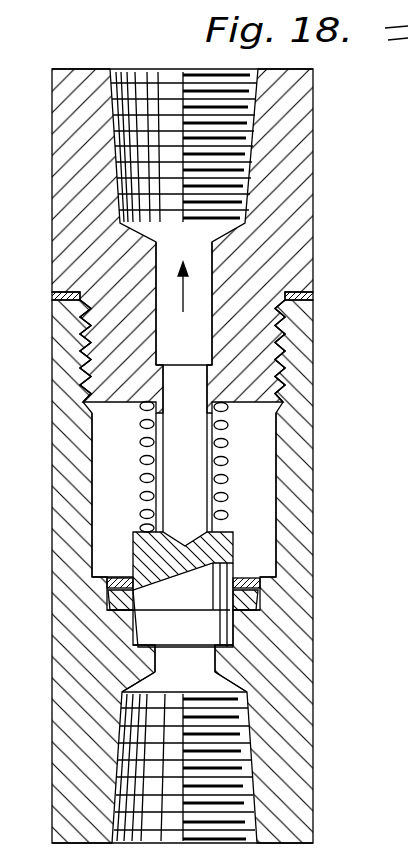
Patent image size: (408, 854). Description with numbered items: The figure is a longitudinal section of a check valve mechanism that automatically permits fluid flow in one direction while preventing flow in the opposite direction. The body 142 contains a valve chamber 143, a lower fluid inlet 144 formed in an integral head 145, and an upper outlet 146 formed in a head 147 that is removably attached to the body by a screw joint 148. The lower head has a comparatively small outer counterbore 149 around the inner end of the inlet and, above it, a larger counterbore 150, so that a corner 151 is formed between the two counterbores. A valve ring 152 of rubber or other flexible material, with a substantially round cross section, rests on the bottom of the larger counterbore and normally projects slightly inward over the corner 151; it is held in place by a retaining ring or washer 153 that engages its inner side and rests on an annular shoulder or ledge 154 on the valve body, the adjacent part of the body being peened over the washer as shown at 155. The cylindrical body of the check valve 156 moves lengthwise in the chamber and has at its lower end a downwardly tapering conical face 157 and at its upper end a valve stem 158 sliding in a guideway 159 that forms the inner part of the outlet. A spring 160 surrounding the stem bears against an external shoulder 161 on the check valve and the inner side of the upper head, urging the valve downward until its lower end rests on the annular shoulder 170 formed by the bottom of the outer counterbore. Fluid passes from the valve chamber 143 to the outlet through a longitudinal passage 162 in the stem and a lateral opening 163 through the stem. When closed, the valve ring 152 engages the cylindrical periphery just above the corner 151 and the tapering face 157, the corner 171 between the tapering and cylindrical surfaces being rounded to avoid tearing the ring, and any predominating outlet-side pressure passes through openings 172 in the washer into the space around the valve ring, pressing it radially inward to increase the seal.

The body 142 is at (305, 533).
The valve chamber 143 is at (265, 477).
The lower fluid inlet 144 is at (185, 659).
The integral head 145 is at (243, 673).
The upper outlet 146 is at (184, 156).
The head 147 is at (287, 230).
The screw joint 148 is at (283, 357).
The outer counterbore 149 is at (237, 631).
The counterbore 150 is at (110, 597).
The corner 151 is at (137, 645).
The valve ring 152 is at (127, 607).
The retaining ring or washer 153 is at (125, 577).
The annular shoulder or ledge 154 is at (263, 595).
The peened part 155 is at (257, 578).
The cylindrical body of check valve 156 is at (237, 545).
The conical face 157 is at (183, 605).
The valve stem 158 is at (156, 367).
The guideway 159 is at (212, 282).
The spring 160 is at (225, 456).
The external shoulder 161 is at (142, 527).
The longitudinal passage 162 is at (185, 407).
The opening 163 is at (159, 505).
The annular shoulder 170 is at (140, 678).
The corner 171 is at (217, 607).
The openings 172 is at (107, 578).